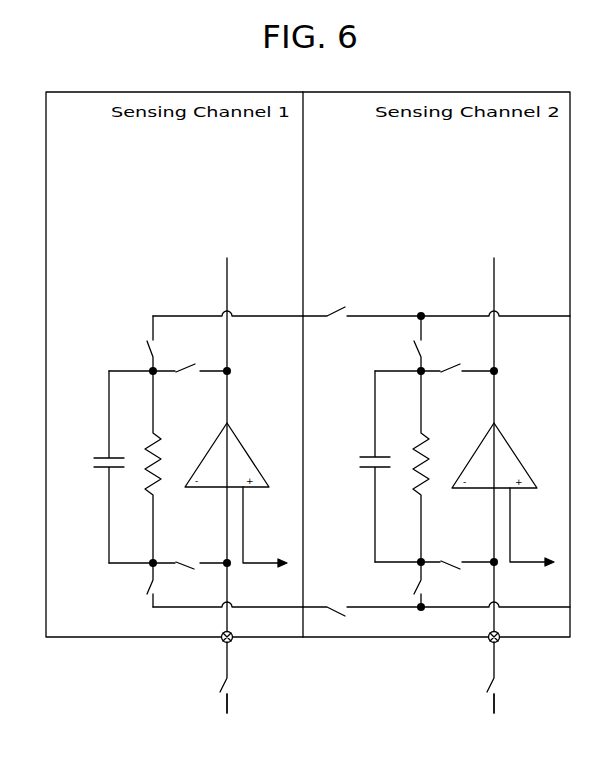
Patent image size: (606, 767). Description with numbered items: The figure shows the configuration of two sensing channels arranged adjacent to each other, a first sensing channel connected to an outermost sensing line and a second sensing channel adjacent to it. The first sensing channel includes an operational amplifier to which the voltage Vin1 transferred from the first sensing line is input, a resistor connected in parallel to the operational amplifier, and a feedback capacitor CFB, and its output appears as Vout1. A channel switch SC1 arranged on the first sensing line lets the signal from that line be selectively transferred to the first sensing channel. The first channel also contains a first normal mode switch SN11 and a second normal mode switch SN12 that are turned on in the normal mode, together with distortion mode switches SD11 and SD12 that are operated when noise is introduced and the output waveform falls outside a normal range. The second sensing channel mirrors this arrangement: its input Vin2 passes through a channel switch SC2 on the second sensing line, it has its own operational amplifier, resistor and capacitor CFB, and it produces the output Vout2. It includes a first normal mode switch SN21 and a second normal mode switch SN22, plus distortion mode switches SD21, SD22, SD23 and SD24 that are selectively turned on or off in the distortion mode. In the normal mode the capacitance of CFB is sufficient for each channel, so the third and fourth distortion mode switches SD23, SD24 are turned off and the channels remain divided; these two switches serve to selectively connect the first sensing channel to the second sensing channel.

The output voltage of first sensing channel Vout1 is at (228, 440).
The output voltage of second sensing channel Vout2 is at (493, 440).
The input voltage from first sensing line Vin1 is at (227, 716).
The input voltage from second sensing line Vin2 is at (495, 716).
The channel switch SC1 is at (239, 677).
The channel switch SC2 is at (507, 677).
The distortion mode switch SD11 is at (131, 585).
The distortion mode switch SD12 is at (131, 343).
The first normal mode switch SN11 is at (190, 556).
The second normal mode switch SN12 is at (190, 360).
The distortion mode switch SD21 is at (398, 584).
The distortion mode switch SD22 is at (398, 343).
The third distortion mode switch SD23 is at (362, 601).
The fourth distortion mode switch SD24 is at (362, 324).
The first normal mode switch SN21 is at (457, 556).
The second normal mode switch SN22 is at (457, 380).
The feedback capacitor CFB is at (241, 467).